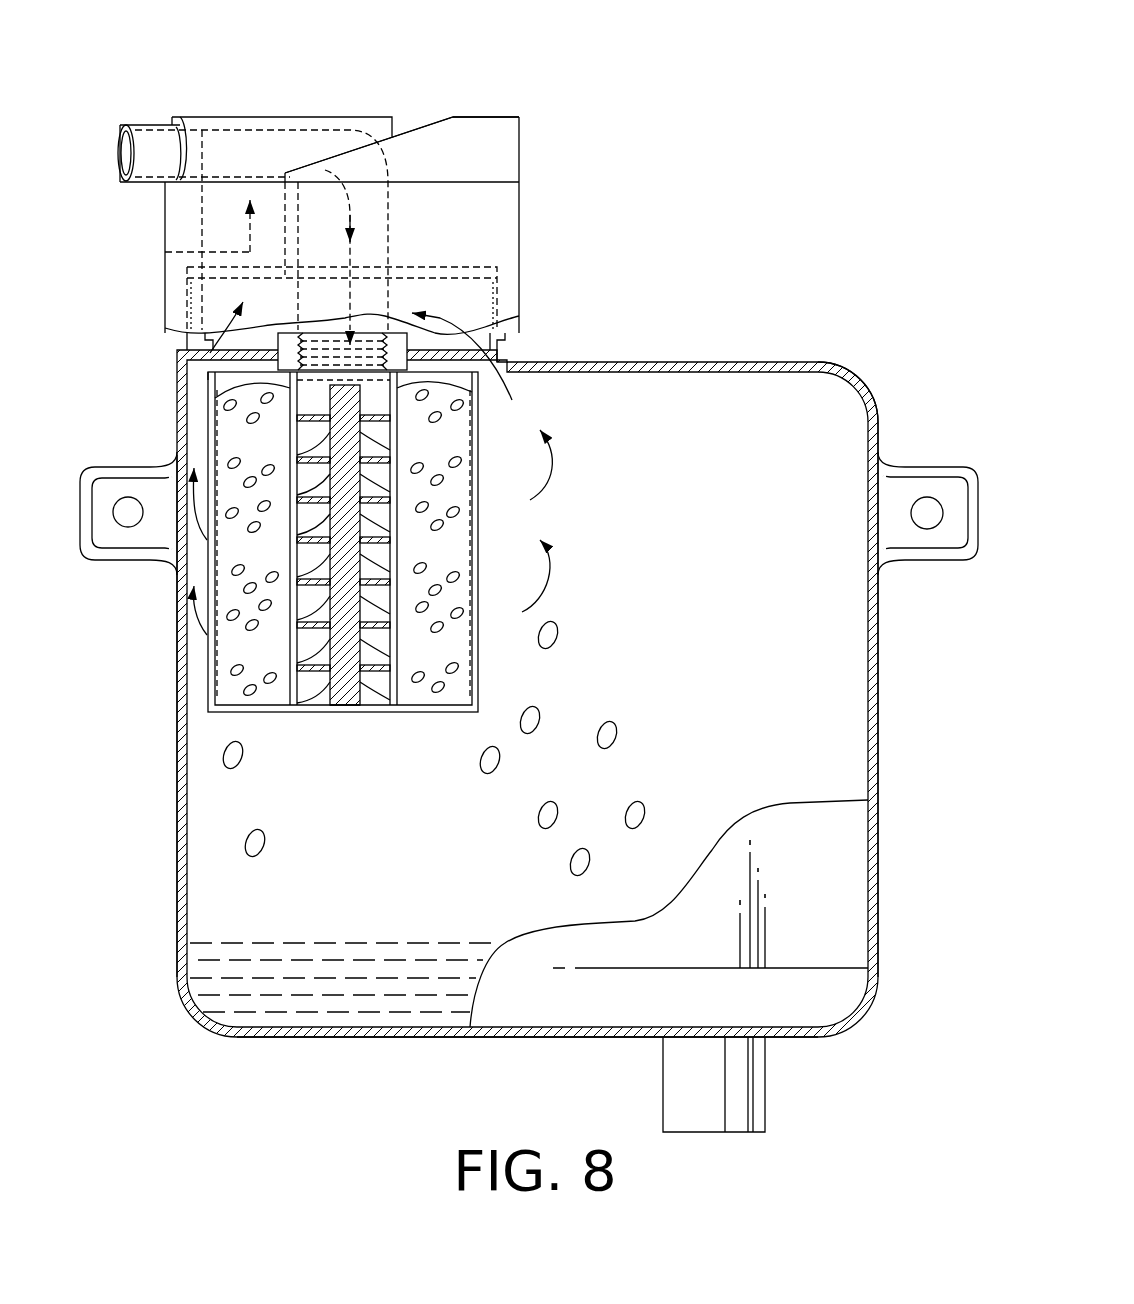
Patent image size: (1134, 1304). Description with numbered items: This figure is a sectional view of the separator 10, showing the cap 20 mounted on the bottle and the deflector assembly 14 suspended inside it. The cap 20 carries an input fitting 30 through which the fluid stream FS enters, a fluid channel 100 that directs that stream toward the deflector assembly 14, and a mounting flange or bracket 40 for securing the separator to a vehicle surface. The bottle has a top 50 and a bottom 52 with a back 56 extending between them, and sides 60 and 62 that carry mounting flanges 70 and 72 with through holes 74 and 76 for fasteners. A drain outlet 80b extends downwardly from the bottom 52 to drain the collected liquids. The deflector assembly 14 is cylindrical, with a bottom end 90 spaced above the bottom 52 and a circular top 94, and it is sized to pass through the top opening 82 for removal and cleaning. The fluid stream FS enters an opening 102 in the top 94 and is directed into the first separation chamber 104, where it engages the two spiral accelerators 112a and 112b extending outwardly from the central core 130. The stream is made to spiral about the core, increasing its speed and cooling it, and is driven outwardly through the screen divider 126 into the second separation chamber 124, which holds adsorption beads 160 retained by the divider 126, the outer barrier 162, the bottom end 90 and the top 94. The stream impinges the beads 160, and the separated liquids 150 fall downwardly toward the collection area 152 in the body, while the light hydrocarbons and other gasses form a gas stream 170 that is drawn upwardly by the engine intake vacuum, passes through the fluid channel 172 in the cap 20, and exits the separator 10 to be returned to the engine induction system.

The separator 10 is at (725, 330).
The deflector assembly 14 is at (484, 432).
The cap 20 is at (545, 184).
The input fitting 30 is at (148, 147).
The mounting flange or bracket 40 is at (482, 117).
The top 50 is at (603, 362).
The bottom 52 is at (507, 1037).
The back 56 is at (805, 448).
The side 60 is at (178, 757).
The side 62 is at (878, 712).
The mounting flange 70 is at (128, 519).
The mounting flange 72 is at (928, 514).
The through hole 74 is at (133, 522).
The through hole 76 is at (928, 518).
The drain outlet 80b is at (753, 1077).
The top opening 82 is at (463, 298).
The bottom end 90 is at (364, 567).
The circular top 94 is at (208, 374).
The fluid channel 100 is at (318, 118).
The opening 102 is at (370, 316).
The first separation chamber 104 is at (388, 527).
The spiral accelerator 112a is at (375, 574).
The spiral accelerator 112b is at (392, 420).
The second separation chamber 124 is at (452, 597).
The screen divider 126 is at (398, 633).
The central core 130 is at (338, 694).
The separated liquids 150 is at (614, 725).
The collection area 152 is at (800, 880).
The adsorption beads 160 is at (270, 684).
The outer barrier 162 is at (482, 525).
The gas stream 170 is at (252, 252).
The fluid channel 172 is at (212, 222).
The fluid stream FS is at (218, 122).